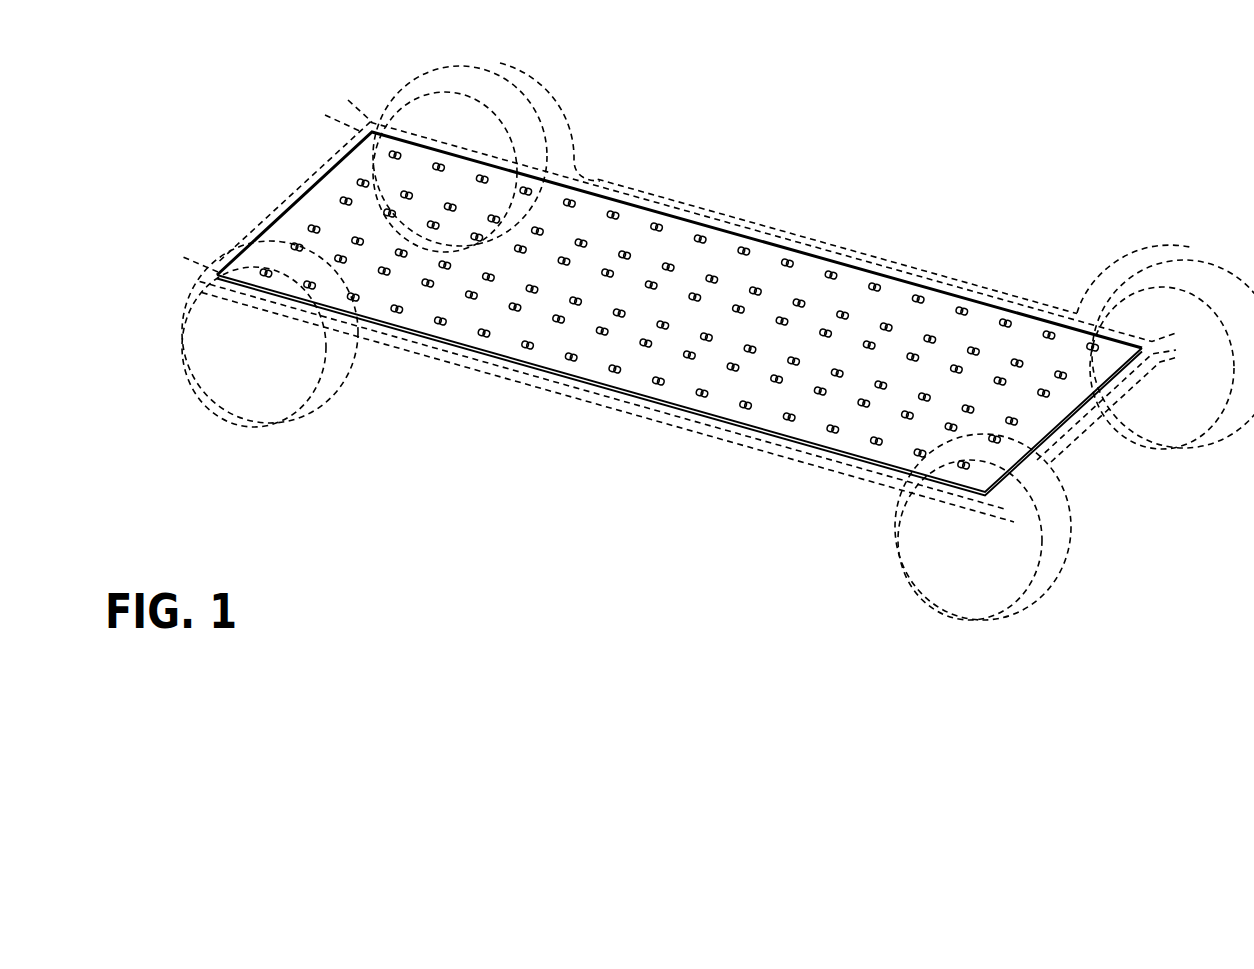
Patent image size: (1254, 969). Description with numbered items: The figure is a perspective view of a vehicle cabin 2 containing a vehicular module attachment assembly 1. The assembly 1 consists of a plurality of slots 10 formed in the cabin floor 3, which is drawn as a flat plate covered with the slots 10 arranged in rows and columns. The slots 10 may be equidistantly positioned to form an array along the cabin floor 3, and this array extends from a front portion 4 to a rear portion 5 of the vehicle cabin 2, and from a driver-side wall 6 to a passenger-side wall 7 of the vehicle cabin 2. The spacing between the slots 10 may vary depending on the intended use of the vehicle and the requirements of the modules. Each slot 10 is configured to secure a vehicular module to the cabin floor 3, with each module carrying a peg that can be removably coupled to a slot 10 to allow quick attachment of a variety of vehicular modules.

The vehicular module attachment assembly 1 is at (907, 194).
The vehicle cabin 2 is at (747, 221).
The cabin floor 3 is at (633, 233).
The front portion 4 is at (1088, 425).
The rear portion 5 is at (288, 193).
The driver-side wall 6 is at (978, 285).
The passenger-side wall 7 is at (776, 453).
The slots 10 is at (656, 386).